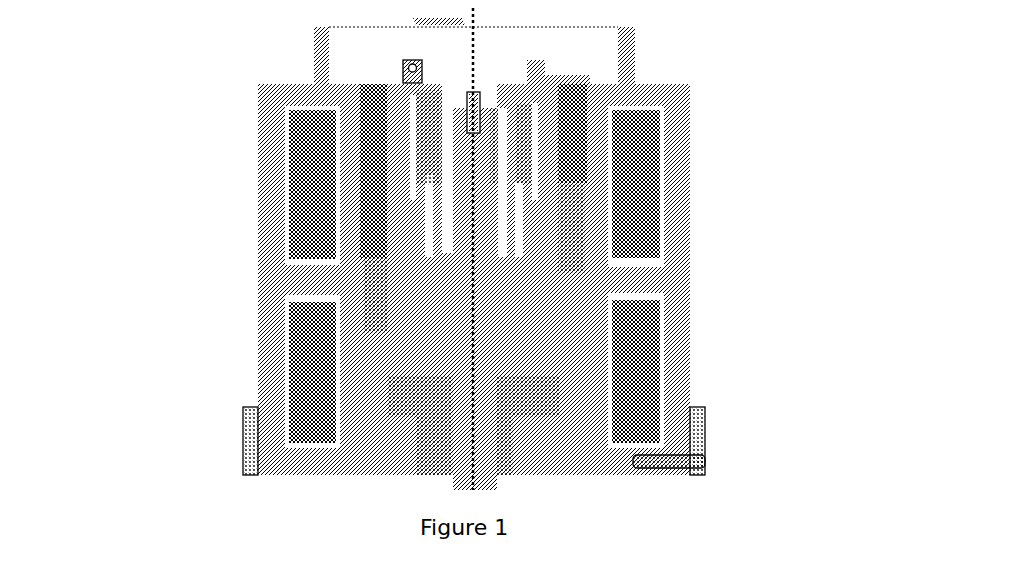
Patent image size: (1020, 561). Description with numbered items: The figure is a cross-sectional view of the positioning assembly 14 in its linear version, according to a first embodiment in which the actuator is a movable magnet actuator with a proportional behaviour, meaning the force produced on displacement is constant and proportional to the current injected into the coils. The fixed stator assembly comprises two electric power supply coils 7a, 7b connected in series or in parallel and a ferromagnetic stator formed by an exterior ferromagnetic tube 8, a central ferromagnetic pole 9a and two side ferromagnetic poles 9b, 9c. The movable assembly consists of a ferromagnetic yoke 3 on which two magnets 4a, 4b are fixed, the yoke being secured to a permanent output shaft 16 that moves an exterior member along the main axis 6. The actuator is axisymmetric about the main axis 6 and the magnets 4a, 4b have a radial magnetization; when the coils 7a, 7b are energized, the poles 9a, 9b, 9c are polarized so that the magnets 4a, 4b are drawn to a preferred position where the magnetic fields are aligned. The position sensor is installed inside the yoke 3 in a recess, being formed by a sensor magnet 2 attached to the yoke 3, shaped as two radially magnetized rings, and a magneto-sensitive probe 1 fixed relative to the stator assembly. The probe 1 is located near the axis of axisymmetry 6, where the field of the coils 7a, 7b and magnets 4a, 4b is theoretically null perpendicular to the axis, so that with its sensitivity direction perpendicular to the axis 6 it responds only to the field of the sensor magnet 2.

The magneto-sensitive probe 1 is at (475, 131).
The sensor magnet 2 is at (418, 162).
The ferromagnetic yoke 3 is at (403, 211).
The magnet 4a is at (371, 247).
The magnet 4b is at (371, 284).
The main axis 6 is at (480, 43).
The electric power supply coil 7a is at (640, 157).
The electric power supply coil 7b is at (647, 376).
The exterior ferromagnetic tube 8 is at (684, 189).
The central ferromagnetic pole 9a is at (625, 280).
The side ferromagnetic pole 9b is at (596, 430).
The side ferromagnetic pole 9c is at (614, 101).
The positioning assembly 14 is at (241, 311).
The output shaft 16 is at (460, 461).